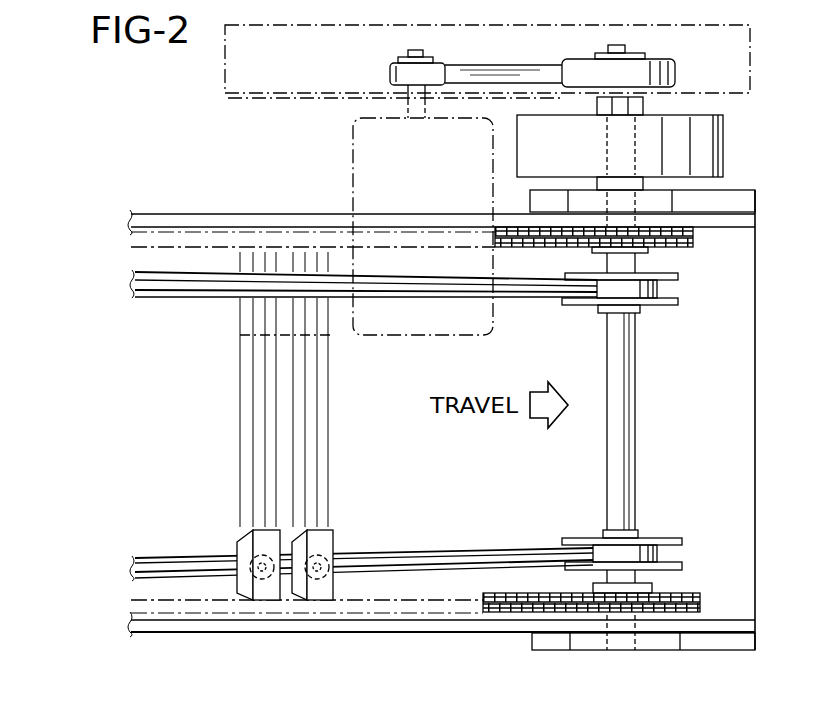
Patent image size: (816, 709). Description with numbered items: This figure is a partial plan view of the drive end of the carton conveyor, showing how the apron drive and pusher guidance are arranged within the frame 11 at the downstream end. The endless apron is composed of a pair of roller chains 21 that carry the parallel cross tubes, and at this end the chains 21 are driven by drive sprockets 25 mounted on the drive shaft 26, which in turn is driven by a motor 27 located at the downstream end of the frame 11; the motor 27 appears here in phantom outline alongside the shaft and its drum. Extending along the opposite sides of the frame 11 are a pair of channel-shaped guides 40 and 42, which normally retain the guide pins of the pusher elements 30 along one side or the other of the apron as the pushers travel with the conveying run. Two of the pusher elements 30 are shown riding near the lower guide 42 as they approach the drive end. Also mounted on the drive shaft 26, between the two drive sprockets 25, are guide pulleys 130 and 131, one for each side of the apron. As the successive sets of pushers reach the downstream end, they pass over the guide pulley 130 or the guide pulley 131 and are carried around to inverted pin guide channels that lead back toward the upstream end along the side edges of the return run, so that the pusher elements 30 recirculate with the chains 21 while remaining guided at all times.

The frame 11 is at (273, 625).
The roller chains 21 is at (518, 249).
The drive sprockets 25 is at (680, 250).
The drive shaft 26 is at (636, 430).
The motor 27 is at (417, 337).
The pusher elements 30 is at (334, 545).
The channel-shaped guide 40 is at (167, 285).
The channel-shaped guide 42 is at (177, 558).
The guide pulley 130 is at (667, 307).
The guide pulley 131 is at (670, 537).